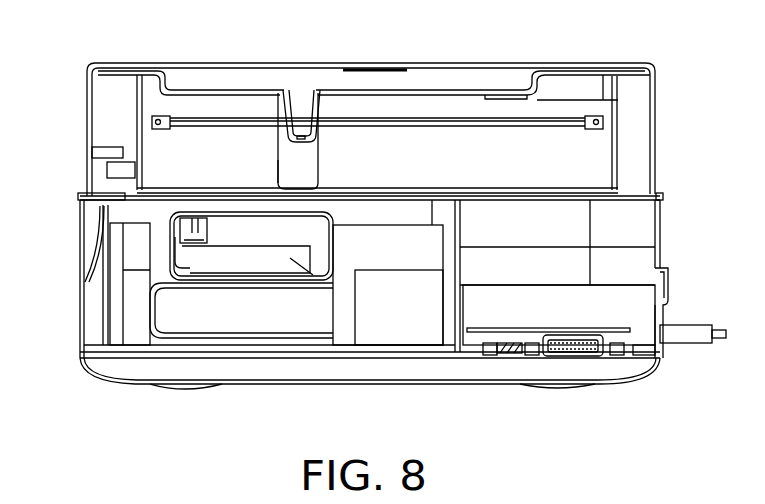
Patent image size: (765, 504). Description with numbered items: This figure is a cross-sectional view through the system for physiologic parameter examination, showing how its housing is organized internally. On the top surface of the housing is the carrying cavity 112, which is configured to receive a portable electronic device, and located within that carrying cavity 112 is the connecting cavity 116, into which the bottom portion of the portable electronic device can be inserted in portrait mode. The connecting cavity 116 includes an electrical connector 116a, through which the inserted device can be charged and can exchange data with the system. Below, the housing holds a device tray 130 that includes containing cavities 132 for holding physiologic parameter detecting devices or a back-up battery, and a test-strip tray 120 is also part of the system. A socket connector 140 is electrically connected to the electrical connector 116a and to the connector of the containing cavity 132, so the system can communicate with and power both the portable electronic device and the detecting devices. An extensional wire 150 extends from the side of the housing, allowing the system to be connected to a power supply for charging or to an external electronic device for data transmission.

The carrying cavity 112 is at (438, 90).
The connecting cavity 116 is at (291, 134).
The electrical connector 116a is at (305, 123).
The socket connector 140 is at (277, 162).
The test-strip tray 120 is at (633, 362).
The device tray 130 is at (100, 243).
The containing cavity 132 is at (150, 262).
The extensional wire 150 is at (697, 333).